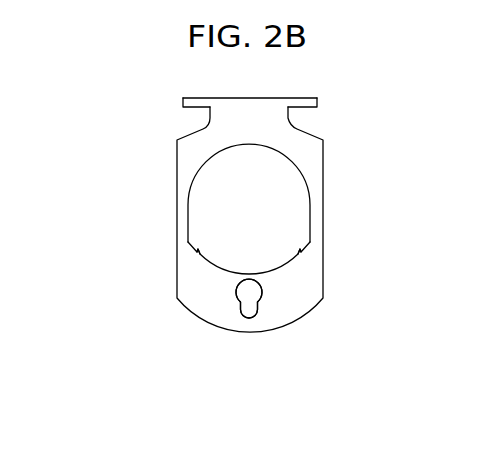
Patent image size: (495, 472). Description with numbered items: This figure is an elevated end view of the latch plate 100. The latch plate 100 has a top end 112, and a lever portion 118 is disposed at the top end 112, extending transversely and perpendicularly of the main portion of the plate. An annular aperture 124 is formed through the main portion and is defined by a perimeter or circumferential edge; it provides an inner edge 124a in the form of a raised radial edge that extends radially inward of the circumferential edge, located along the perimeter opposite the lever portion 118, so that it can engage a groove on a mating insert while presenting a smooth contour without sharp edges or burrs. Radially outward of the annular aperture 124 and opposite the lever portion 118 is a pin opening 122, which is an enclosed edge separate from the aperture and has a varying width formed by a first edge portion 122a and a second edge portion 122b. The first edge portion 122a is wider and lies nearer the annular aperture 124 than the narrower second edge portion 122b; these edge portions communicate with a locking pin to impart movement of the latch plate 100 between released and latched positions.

The latch plate 100 is at (276, 227).
The top end 112 is at (206, 98).
The lever portion 118 is at (317, 103).
The annular aperture 124 is at (212, 192).
The inner edge 124a is at (243, 277).
The pin opening 122 is at (237, 285).
The first edge portion 122a is at (237, 292).
The second edge portion 122b is at (239, 315).